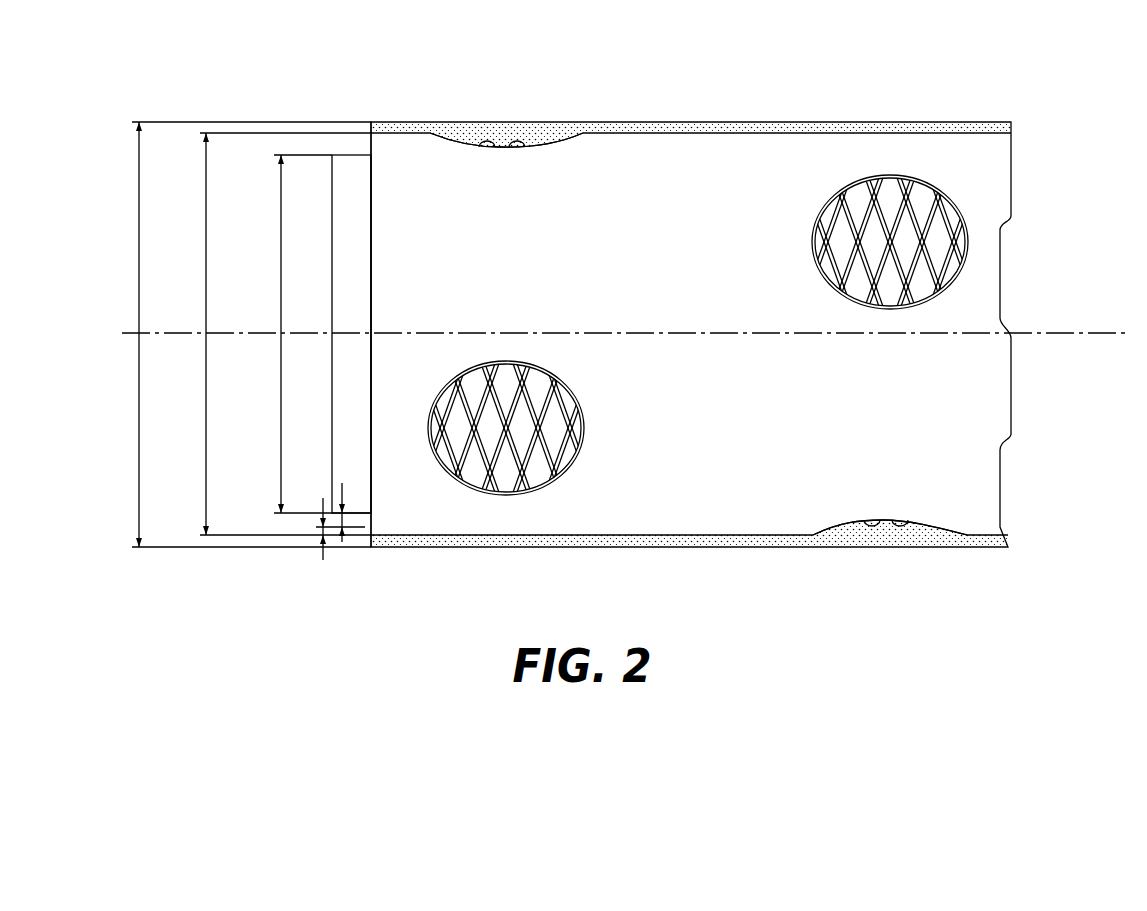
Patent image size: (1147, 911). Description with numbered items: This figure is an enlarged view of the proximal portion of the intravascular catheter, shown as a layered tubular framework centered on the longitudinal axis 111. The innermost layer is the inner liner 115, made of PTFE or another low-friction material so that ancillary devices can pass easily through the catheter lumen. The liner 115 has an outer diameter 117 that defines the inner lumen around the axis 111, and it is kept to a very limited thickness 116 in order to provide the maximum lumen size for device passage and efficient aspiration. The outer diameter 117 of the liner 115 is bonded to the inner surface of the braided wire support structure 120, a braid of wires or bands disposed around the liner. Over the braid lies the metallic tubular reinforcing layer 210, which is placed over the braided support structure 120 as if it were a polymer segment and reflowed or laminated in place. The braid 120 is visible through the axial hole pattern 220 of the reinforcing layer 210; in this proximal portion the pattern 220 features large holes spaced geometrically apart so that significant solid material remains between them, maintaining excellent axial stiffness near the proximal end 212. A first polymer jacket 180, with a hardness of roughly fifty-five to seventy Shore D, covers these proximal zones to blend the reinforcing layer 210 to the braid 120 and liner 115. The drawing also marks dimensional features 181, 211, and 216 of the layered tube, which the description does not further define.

The longitudinal axis 111 is at (1071, 332).
The inner liner 115 is at (351, 163).
The thickness 116 is at (342, 490).
The outer diameter 117 is at (280, 287).
The braided wire support structure 120 is at (890, 203).
The first polymer jacket 180 is at (523, 130).
The outer diameter dimension 181 is at (139, 488).
The metallic tubular reinforcing layer 210 is at (707, 158).
The inner diameter dimension 211 is at (206, 425).
The proximal end 212 is at (373, 130).
The wall gap dimension 216 is at (322, 553).
The axial hole pattern 220 is at (858, 303).